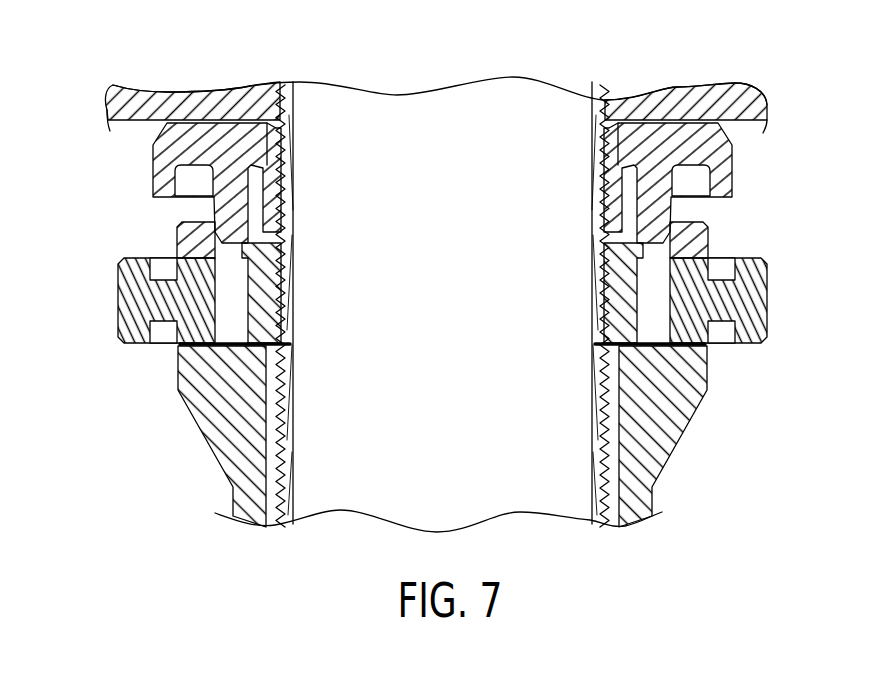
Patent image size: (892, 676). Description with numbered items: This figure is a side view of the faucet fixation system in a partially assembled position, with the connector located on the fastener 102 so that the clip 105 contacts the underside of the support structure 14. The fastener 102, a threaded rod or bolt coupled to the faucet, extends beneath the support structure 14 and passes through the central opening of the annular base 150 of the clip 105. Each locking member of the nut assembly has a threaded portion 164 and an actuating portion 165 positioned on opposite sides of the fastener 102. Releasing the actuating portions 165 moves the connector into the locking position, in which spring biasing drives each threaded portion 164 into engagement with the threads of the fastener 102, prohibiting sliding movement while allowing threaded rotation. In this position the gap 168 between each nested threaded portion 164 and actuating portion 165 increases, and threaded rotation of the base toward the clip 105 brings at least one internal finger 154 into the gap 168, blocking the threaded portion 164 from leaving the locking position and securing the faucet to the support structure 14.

The support structure 14 is at (168, 100).
The fastener 102 is at (292, 104).
The clip 105 is at (135, 172).
The annular base 150 is at (716, 155).
The internal fingers 154 is at (232, 208).
The threaded portion 164 is at (282, 318).
The actuating portion 165 is at (118, 294).
The gap 168 is at (236, 286).